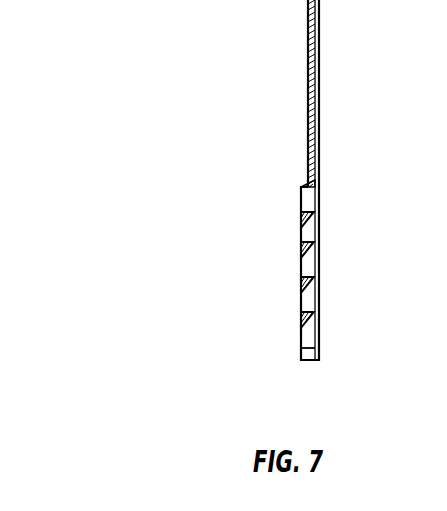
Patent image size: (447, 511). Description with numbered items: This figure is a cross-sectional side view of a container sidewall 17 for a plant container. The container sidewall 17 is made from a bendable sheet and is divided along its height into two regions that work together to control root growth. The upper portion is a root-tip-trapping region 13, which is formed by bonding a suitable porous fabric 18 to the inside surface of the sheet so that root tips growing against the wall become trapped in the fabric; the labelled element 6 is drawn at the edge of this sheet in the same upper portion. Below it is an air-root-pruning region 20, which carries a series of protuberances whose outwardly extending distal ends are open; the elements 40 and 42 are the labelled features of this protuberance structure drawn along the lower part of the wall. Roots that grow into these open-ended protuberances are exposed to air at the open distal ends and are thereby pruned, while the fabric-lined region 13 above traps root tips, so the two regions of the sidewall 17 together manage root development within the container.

The container sidewall 17 is at (117, 92).
The root-tip-trapping region 13 is at (238, 186).
The porous fabric 18 is at (321, 25).
The strip edge 6 is at (308, 51).
The air-root-pruning region 20 is at (238, 182).
The teeth 40 is at (302, 255).
The teeth 42 is at (303, 316).